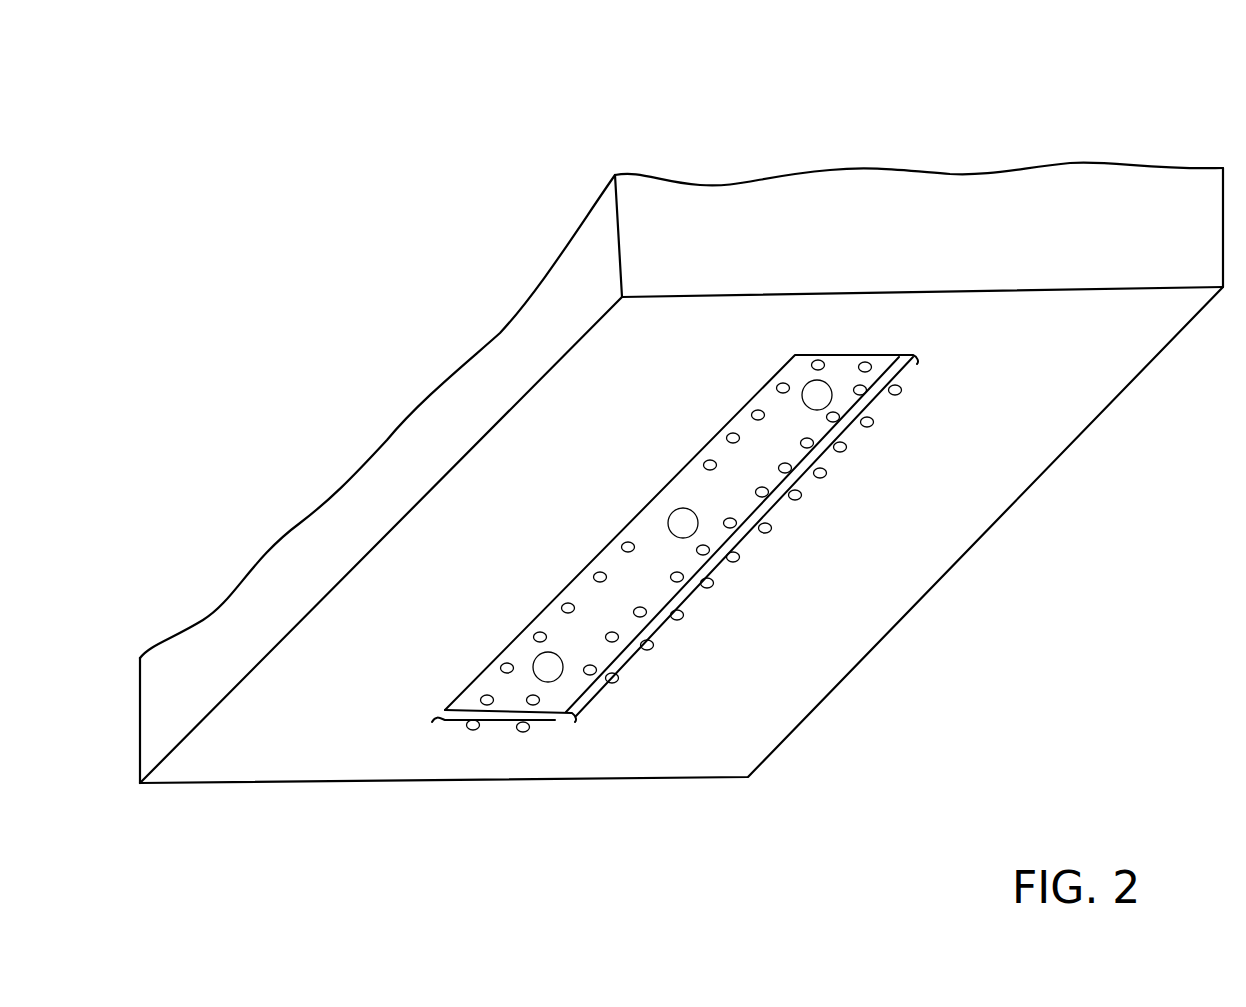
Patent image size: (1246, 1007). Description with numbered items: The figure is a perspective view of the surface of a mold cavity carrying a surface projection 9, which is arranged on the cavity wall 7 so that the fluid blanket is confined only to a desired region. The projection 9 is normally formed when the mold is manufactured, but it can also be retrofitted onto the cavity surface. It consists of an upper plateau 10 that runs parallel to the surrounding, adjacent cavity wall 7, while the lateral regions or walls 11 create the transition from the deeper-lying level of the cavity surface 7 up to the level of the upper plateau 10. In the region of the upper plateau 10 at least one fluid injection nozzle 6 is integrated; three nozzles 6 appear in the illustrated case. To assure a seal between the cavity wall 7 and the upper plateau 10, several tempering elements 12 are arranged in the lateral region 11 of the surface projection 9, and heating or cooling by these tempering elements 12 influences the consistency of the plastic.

The fluid injection nozzle 6 is at (683, 523).
The cavity wall 7 is at (1078, 341).
The surface projection 9 is at (739, 497).
The upper plateau 10 is at (773, 440).
The lateral wall 11 is at (593, 553).
The tempering element 12 is at (594, 577).